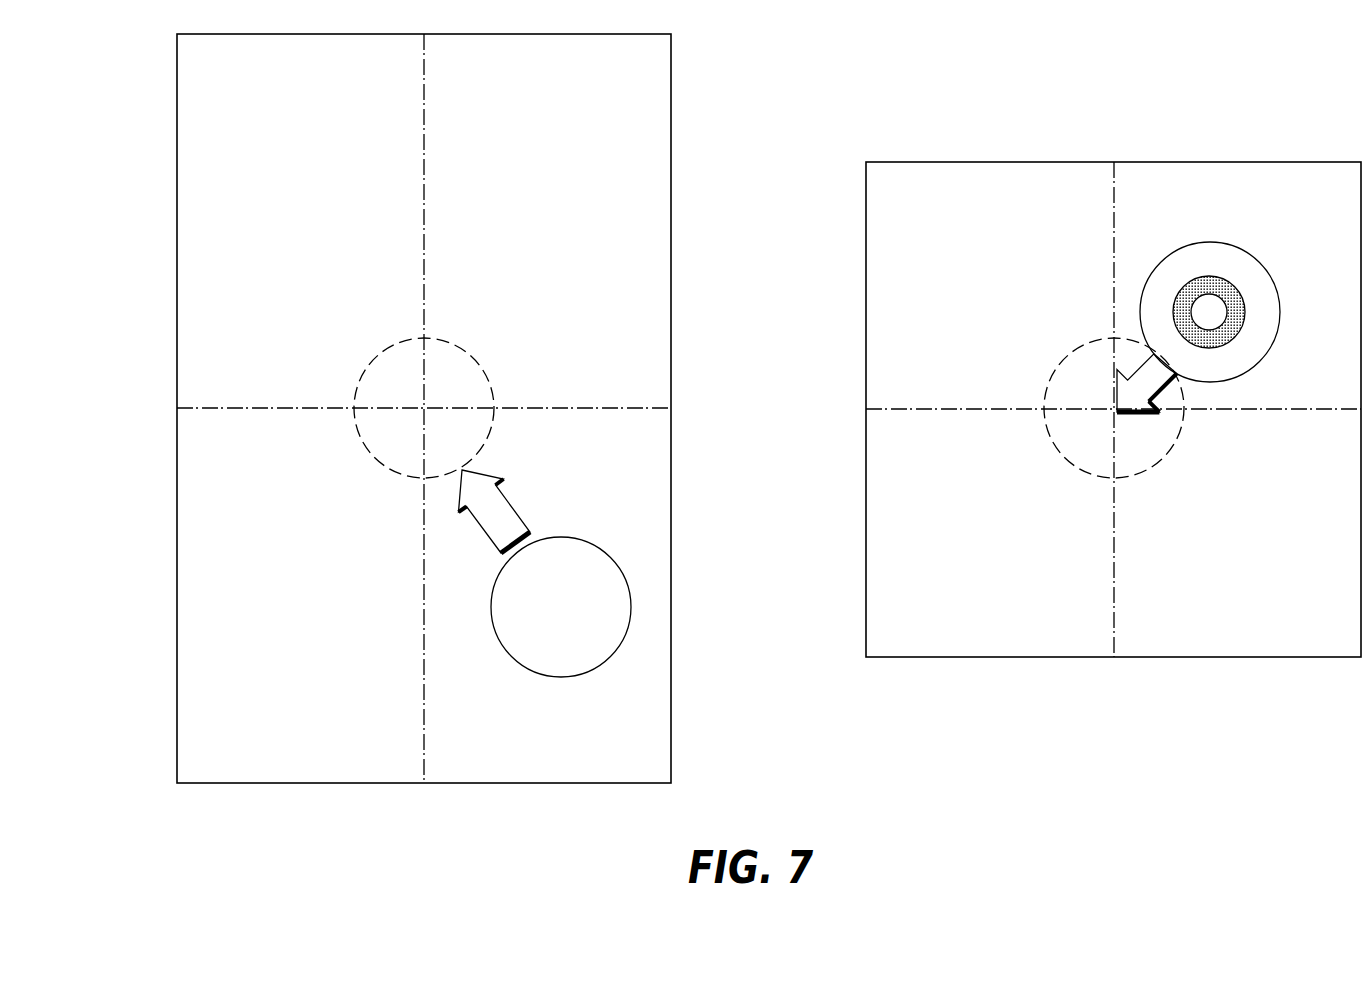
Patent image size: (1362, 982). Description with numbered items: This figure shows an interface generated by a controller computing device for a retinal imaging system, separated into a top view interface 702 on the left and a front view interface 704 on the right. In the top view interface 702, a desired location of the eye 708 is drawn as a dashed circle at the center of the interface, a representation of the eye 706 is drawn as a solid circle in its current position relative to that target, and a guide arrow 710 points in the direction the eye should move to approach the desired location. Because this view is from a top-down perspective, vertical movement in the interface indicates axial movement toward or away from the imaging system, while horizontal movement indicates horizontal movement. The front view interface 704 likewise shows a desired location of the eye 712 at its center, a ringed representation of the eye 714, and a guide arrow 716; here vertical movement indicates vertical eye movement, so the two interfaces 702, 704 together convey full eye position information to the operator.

The top view interface 702 is at (159, 838).
The front view interface 704 is at (1289, 698).
The representation of the eye 706 is at (540, 678).
The desired location of the eye 708 is at (358, 370).
The guide arrow 710 is at (520, 520).
The target position 712 is at (1063, 455).
The representation of the eye 714 is at (1148, 271).
The guide arrow 716 is at (1178, 392).